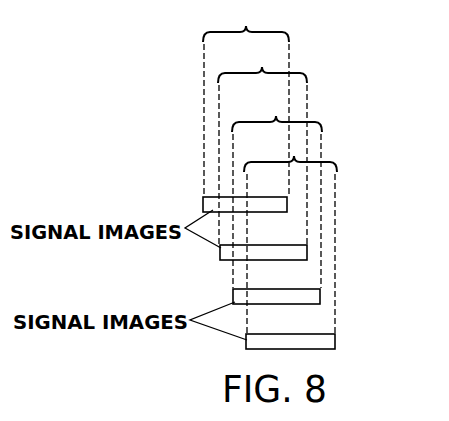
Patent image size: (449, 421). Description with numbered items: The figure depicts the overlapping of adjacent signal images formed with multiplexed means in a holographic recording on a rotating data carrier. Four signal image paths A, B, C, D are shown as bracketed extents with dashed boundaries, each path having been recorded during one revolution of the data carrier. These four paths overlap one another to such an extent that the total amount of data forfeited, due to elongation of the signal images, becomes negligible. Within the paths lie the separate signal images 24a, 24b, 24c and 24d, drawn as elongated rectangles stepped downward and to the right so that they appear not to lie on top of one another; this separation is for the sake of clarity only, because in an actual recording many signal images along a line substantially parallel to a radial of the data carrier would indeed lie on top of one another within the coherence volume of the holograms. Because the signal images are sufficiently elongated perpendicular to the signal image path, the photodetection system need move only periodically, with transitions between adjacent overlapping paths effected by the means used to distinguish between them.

The signal image 24a is at (203, 204).
The signal image 24b is at (220, 254).
The signal image 24c is at (233, 300).
The signal image 24d is at (246, 347).
The signal image path A is at (246, 100).
The signal image path B is at (262, 145).
The signal image path C is at (277, 190).
The signal image path D is at (290, 234).